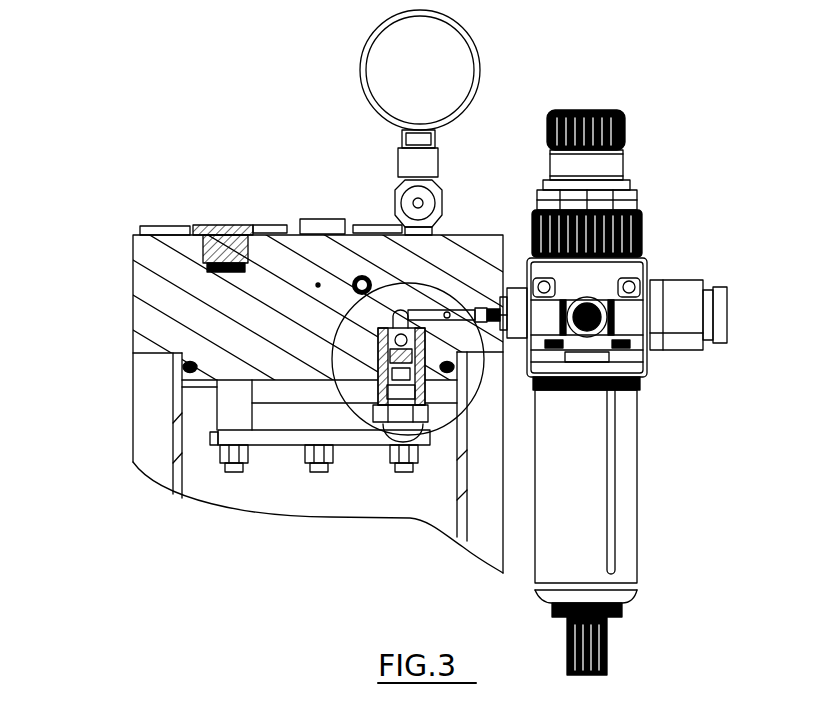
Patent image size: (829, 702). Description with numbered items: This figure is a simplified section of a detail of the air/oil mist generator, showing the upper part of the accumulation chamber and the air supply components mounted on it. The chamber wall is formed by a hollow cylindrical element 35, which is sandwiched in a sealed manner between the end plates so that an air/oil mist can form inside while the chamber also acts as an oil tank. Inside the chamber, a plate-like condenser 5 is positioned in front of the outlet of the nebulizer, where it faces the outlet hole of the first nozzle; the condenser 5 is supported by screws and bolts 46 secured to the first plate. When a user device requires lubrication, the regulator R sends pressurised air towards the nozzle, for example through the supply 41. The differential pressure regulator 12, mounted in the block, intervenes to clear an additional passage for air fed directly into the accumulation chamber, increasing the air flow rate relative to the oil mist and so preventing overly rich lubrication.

The differential pressure regulator 12 is at (343, 322).
The supply 41 is at (447, 313).
The regulator R is at (648, 235).
The hollow cylindrical element 35 is at (177, 433).
The condenser 5 is at (287, 440).
The screws and bolts 46 is at (397, 465).